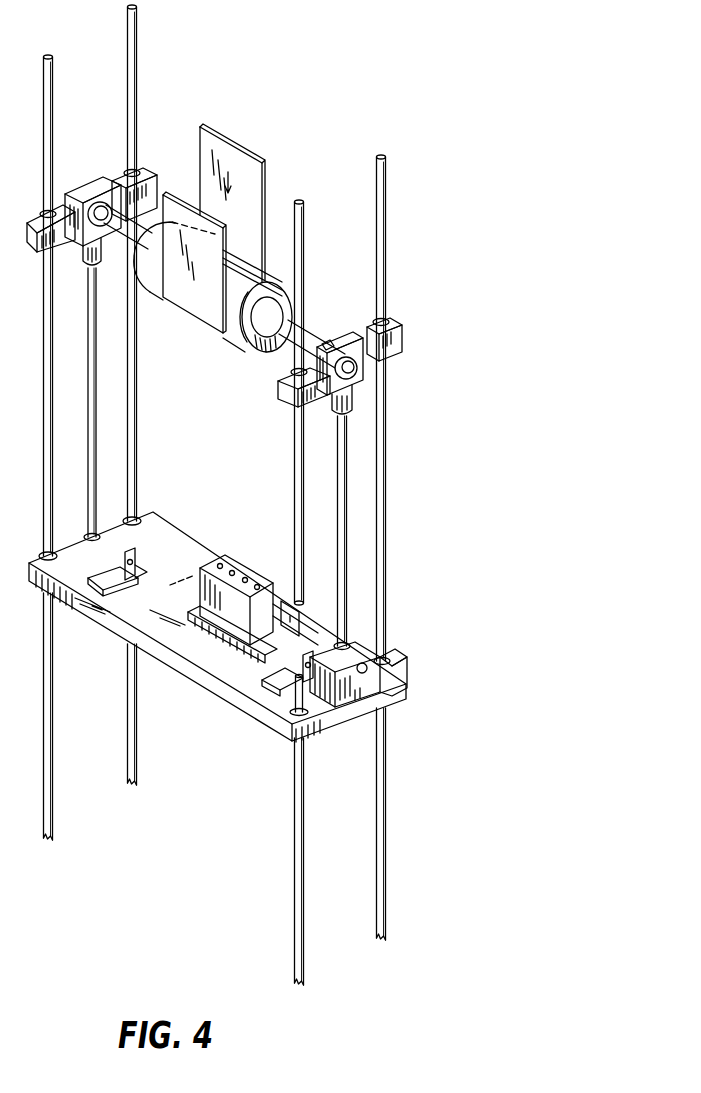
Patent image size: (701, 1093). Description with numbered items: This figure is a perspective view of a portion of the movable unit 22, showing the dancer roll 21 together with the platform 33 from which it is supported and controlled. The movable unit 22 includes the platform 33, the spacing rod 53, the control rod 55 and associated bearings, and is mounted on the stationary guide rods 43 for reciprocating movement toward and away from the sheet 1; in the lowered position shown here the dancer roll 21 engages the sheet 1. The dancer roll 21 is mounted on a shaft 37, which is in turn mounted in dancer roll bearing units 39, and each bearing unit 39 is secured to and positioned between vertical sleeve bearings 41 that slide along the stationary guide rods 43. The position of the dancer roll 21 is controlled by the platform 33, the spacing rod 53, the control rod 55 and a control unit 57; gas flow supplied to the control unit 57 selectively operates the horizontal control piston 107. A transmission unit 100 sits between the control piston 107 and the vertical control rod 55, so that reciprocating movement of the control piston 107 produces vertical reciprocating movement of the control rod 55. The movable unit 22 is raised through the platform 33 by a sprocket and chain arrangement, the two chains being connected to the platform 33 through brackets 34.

The sheet 1 is at (263, 178).
The dancer roll 21 is at (256, 345).
The movable unit 22 is at (426, 526).
The platform 33 is at (232, 686).
The brackets 34 is at (146, 558).
The shaft 37 is at (328, 344).
The dancer roll bearing units 39 is at (84, 186).
The vertical sleeve bearings 41 is at (147, 176).
The stationary guide rods 43 is at (386, 204).
The spacing rod 53 is at (95, 407).
The control rod 55 is at (345, 482).
The control unit 57 is at (236, 562).
The transmission unit 100 is at (363, 700).
The control piston 107 is at (318, 632).